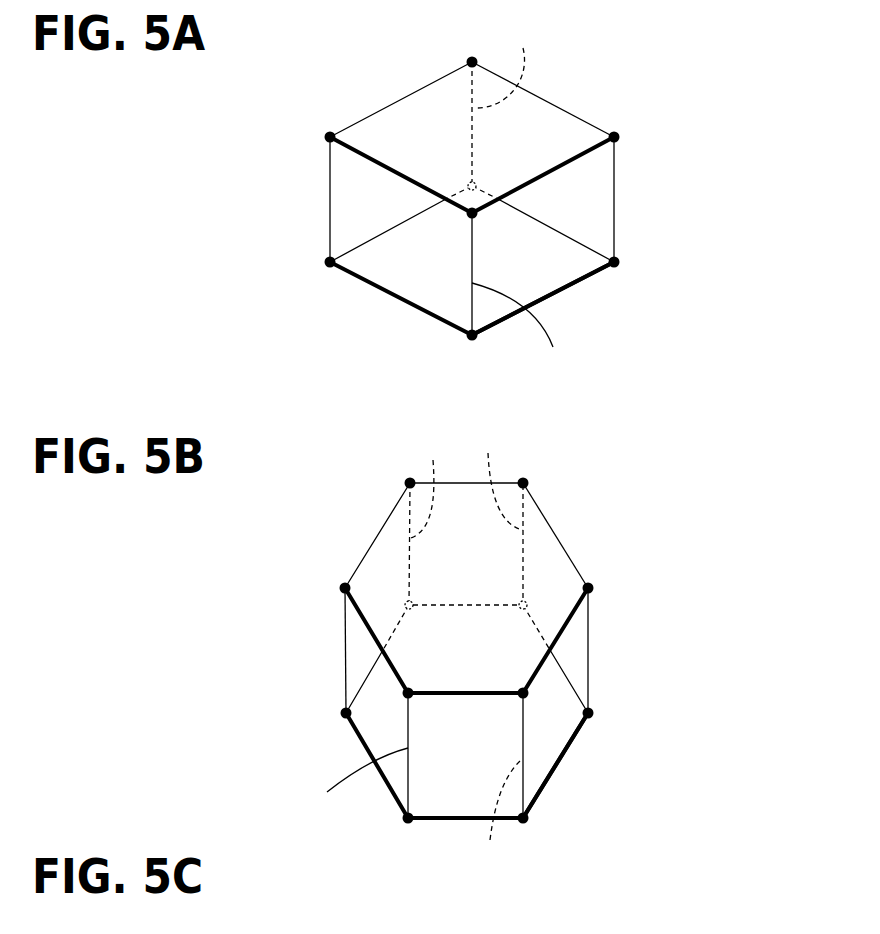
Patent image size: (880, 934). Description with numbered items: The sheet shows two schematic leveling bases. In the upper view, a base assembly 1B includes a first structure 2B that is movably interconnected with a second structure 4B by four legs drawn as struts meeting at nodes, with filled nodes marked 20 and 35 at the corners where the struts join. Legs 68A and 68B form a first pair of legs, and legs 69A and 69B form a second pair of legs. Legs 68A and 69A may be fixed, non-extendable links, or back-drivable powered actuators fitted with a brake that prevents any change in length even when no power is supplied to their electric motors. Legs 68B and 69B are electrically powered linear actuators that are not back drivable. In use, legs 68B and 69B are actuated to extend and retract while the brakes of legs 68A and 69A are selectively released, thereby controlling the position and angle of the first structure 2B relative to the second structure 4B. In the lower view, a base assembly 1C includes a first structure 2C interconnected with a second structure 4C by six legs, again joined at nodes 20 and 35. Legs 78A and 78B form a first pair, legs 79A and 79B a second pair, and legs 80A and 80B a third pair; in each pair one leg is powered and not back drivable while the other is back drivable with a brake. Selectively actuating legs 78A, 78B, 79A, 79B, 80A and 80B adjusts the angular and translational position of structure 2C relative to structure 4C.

In FIG. 5B, the base assembly 1B is at (470, 171).
In FIG. 5B, the first structure 2B is at (553, 100).
In FIG. 5B, the second structure 4B is at (550, 297).
In FIG. 5B, the first node 20 is at (470, 60).
In FIG. 5C, the first node 20 is at (408, 482).
In FIG. 5B, the second node 35 is at (469, 183).
In FIG. 5C, the second node 35 is at (406, 602).
In FIG. 5B, the leg 68A is at (330, 194).
In FIG. 5B, the leg 68B is at (616, 205).
In FIG. 5B, the leg 69A is at (513, 63).
In FIG. 5B, the leg 69B is at (529, 330).
In FIG. 5C, the base assembly 1C is at (464, 631).
In FIG. 5C, the first structure 2C is at (575, 557).
In FIG. 5C, the second structure 4C is at (555, 770).
In FIG. 5C, the leg 78A is at (345, 628).
In FIG. 5C, the leg 78B is at (588, 634).
In FIG. 5C, the leg 79A is at (498, 819).
In FIG. 5C, the leg 79B is at (429, 484).
In FIG. 5C, the leg 80A is at (346, 785).
In FIG. 5C, the leg 80B is at (499, 479).